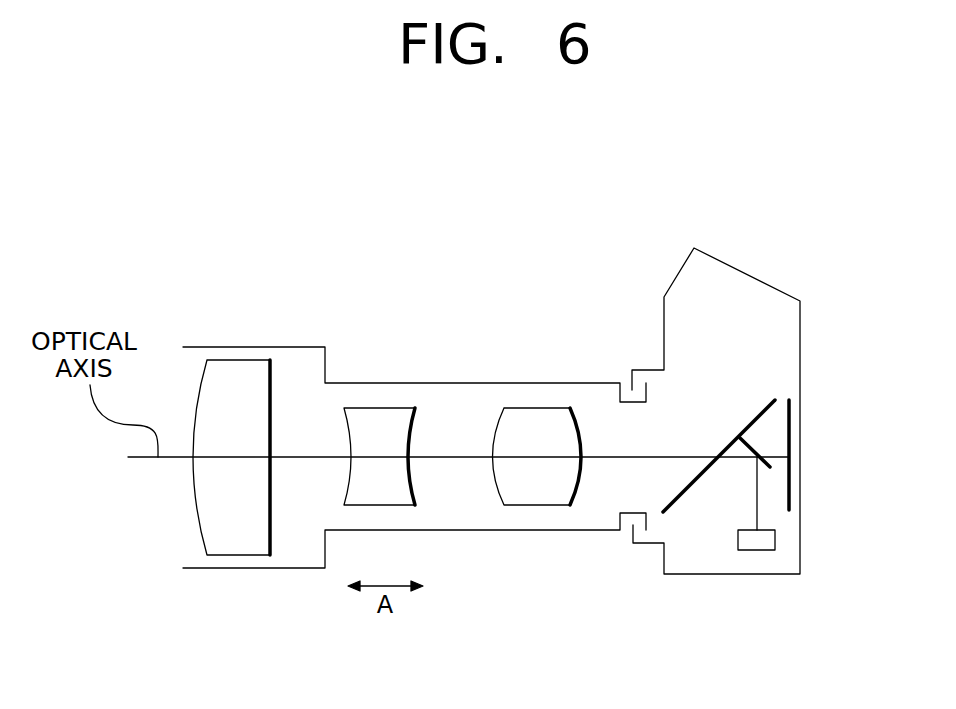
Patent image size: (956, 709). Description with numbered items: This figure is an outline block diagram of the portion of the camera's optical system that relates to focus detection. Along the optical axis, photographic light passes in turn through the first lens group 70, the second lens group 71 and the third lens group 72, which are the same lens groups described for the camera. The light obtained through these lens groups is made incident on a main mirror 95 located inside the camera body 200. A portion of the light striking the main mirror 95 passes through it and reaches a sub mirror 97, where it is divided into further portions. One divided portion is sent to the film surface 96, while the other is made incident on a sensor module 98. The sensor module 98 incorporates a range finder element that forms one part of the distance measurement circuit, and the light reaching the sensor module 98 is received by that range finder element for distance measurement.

The first lens group 70 is at (237, 540).
The second lens group 71 is at (382, 420).
The third lens group 72 is at (540, 488).
The main mirror 95 is at (763, 407).
The film surface 96 is at (790, 424).
The sub mirror 97 is at (772, 462).
The sensor module 98 is at (776, 541).
The camera body 200 is at (718, 574).